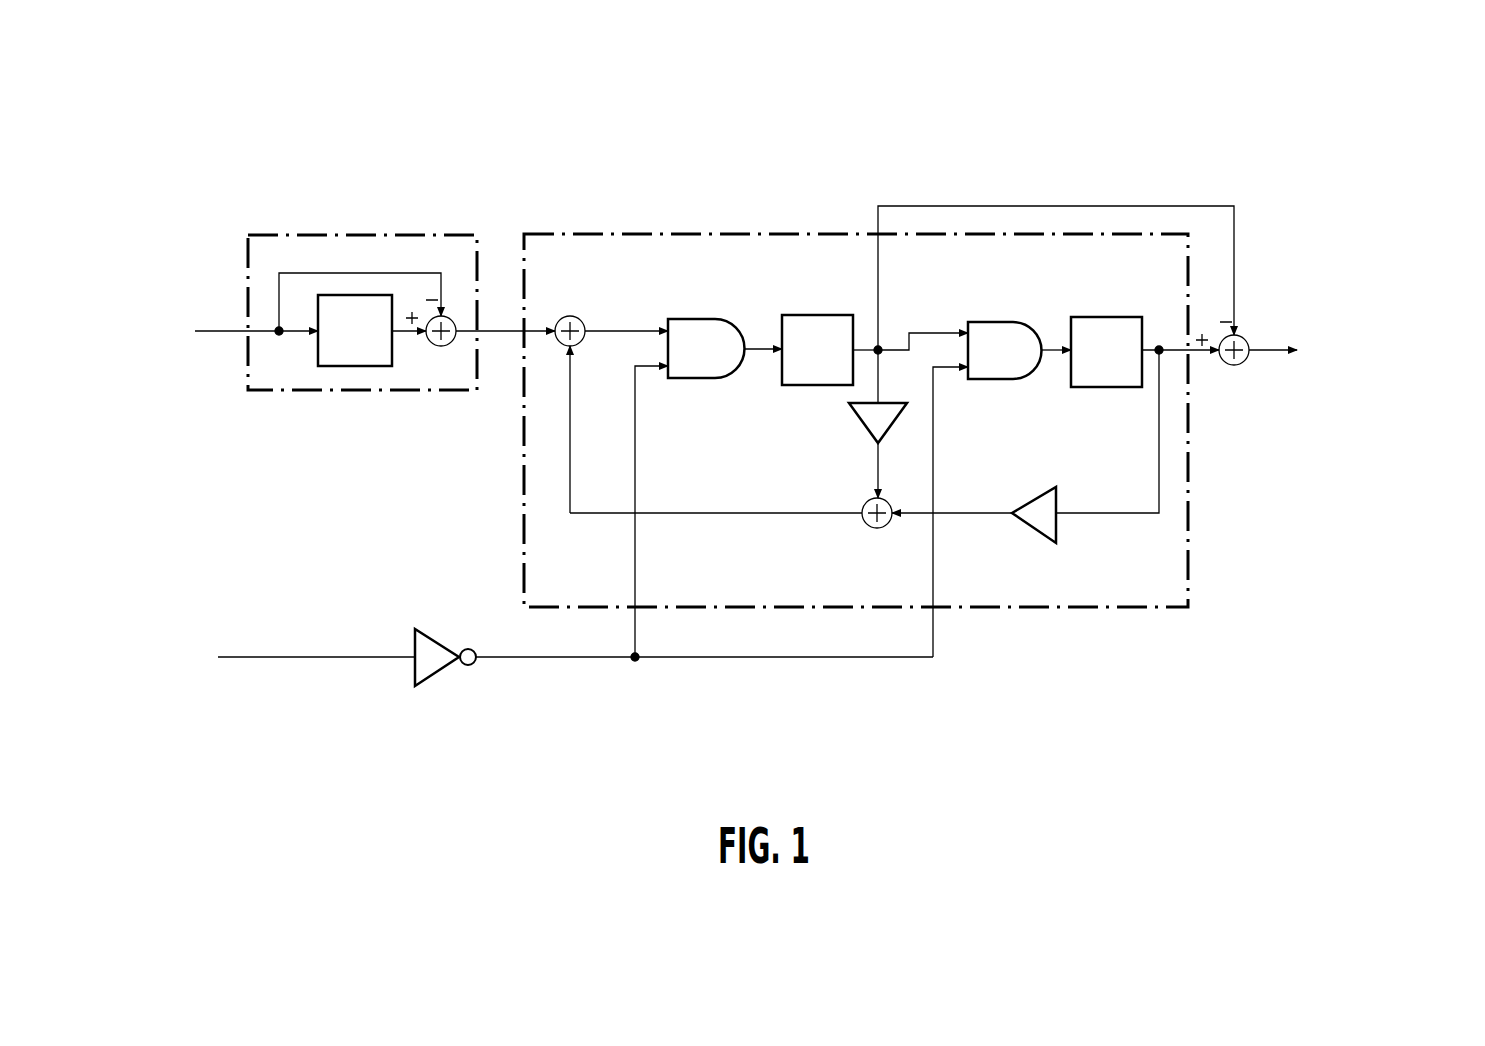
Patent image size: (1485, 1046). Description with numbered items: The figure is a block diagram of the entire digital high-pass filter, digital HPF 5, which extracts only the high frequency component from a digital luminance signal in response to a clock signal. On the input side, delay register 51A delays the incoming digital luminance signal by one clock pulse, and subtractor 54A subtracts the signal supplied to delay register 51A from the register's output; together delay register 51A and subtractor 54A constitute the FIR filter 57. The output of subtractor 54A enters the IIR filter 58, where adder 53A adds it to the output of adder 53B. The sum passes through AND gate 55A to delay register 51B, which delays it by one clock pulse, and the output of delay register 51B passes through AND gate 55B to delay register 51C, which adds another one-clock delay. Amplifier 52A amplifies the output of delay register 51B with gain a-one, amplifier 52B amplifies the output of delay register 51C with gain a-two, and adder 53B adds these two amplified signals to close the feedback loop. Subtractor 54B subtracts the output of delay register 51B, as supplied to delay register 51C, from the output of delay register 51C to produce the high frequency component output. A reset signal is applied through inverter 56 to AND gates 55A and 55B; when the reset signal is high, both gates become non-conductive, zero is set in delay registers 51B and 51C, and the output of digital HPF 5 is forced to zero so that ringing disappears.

The digital HPF 5 is at (1112, 128).
The FIR filter 57 is at (364, 234).
The IIR filter 58 is at (695, 234).
The delay register 51A is at (343, 366).
The delay register 51B is at (806, 315).
The delay register 51C is at (1095, 317).
The amplifier 52A is at (860, 413).
The amplifier 52B is at (1040, 525).
The adder 53A is at (570, 316).
The adder 53B is at (877, 528).
The subtractor 54A is at (441, 346).
The subtractor 54B is at (1234, 366).
The AND gate 55A is at (690, 319).
The AND gate 55B is at (988, 322).
The inverter 56 is at (440, 675).